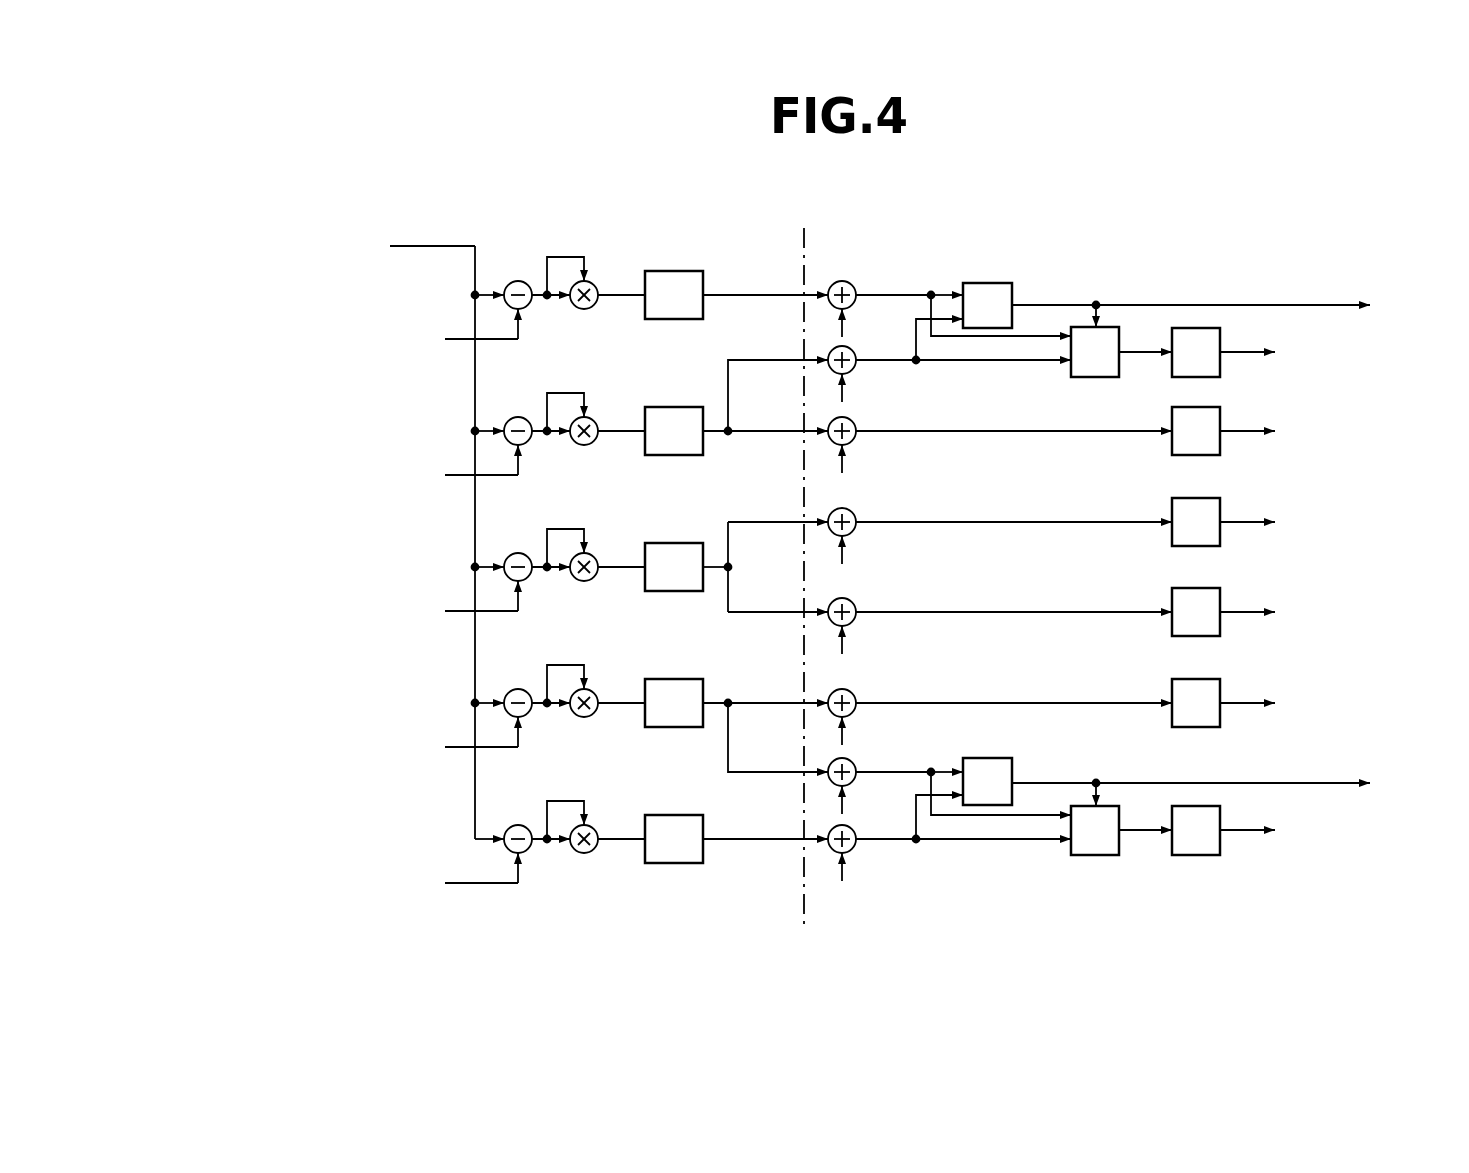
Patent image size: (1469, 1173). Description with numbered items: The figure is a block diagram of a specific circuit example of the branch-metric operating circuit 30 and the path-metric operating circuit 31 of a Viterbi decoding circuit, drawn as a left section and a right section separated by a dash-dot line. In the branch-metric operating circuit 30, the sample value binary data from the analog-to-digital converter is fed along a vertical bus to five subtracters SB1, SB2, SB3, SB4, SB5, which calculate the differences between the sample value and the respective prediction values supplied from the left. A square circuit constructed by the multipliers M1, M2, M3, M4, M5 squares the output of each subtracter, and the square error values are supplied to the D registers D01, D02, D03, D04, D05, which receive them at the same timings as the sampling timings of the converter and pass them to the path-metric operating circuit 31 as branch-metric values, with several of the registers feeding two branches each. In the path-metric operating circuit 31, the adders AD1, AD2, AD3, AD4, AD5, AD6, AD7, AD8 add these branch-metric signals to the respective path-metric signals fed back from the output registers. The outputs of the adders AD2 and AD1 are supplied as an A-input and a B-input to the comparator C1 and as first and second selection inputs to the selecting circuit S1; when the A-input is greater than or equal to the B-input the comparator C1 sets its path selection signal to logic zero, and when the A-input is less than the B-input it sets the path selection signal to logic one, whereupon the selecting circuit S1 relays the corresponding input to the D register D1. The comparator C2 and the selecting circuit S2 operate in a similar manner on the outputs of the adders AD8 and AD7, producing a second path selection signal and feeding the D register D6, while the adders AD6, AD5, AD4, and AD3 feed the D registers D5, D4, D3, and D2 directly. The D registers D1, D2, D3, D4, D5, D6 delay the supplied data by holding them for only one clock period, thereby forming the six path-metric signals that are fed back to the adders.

The branch-metric operating circuit 30 is at (454, 543).
The path-metric operating circuit 31 is at (1073, 535).
The subtracter SB1 is at (527, 850).
The subtracter SB2 is at (527, 714).
The subtracter SB3 is at (527, 578).
The subtracter SB4 is at (527, 442).
The subtracter SB5 is at (527, 306).
The multiplier M1 is at (585, 852).
The multiplier M2 is at (585, 716).
The multiplier M3 is at (585, 580).
The multiplier M4 is at (585, 444).
The multiplier M5 is at (585, 308).
The D register D01 is at (674, 839).
The D register D02 is at (674, 703).
The D register D03 is at (674, 567).
The D register D04 is at (674, 431).
The D register D05 is at (674, 295).
The adder AD1 is at (863, 814).
The adder AD2 is at (863, 747).
The adder AD3 is at (863, 678).
The adder AD4 is at (863, 587).
The adder AD5 is at (863, 497).
The adder AD6 is at (863, 406).
The adder AD7 is at (863, 335).
The adder AD8 is at (852, 285).
The comparator C1 is at (987, 781).
The comparator C2 is at (987, 305).
The selecting circuit S1 is at (1095, 830).
The selecting circuit S2 is at (1095, 352).
The D register D1 is at (1196, 830).
The D register D2 is at (1196, 703).
The D register D3 is at (1196, 612).
The D register D4 is at (1196, 522).
The D register D5 is at (1196, 431).
The D register D6 is at (1196, 352).